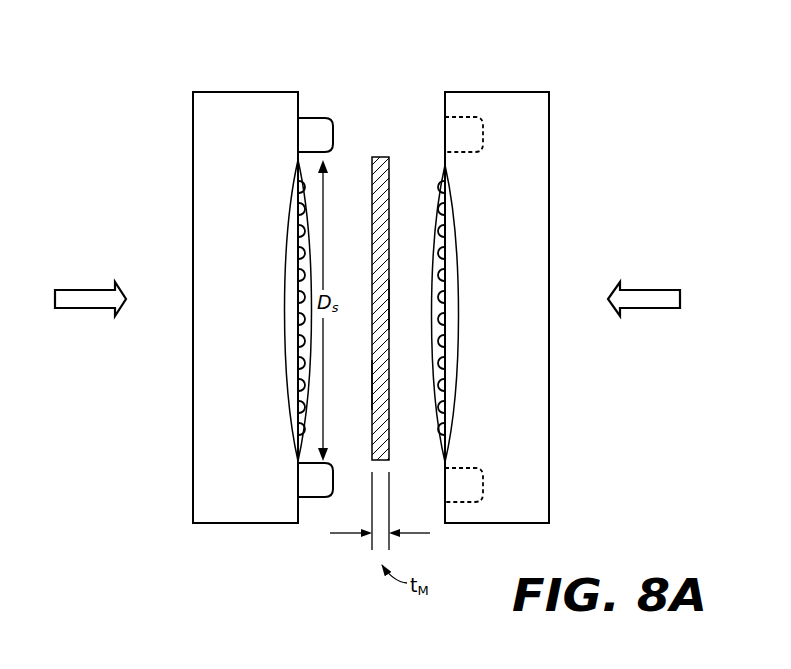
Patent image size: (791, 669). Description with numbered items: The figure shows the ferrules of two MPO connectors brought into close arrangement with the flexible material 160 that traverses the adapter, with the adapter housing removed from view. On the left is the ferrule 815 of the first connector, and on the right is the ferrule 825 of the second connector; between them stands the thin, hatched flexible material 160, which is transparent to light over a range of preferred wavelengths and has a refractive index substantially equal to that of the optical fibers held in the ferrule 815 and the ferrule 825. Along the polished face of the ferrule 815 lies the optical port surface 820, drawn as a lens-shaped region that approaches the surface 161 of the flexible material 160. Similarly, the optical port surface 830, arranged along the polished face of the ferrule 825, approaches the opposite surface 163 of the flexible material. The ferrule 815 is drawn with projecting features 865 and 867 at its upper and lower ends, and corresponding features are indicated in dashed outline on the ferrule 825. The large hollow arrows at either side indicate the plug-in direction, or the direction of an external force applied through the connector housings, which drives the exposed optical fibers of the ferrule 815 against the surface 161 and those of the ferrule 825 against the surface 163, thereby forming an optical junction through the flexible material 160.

The flexible material 160 is at (381, 168).
The surface of the flexible material 161 is at (369, 381).
The surface of the flexible material 163 is at (392, 300).
The ferrule 815 is at (245, 307).
The optical port surface 820 is at (281, 369).
The ferrule 825 is at (497, 307).
The optical port surface 830 is at (456, 220).
The upper stop 865 is at (307, 117).
The lower stop 867 is at (319, 500).